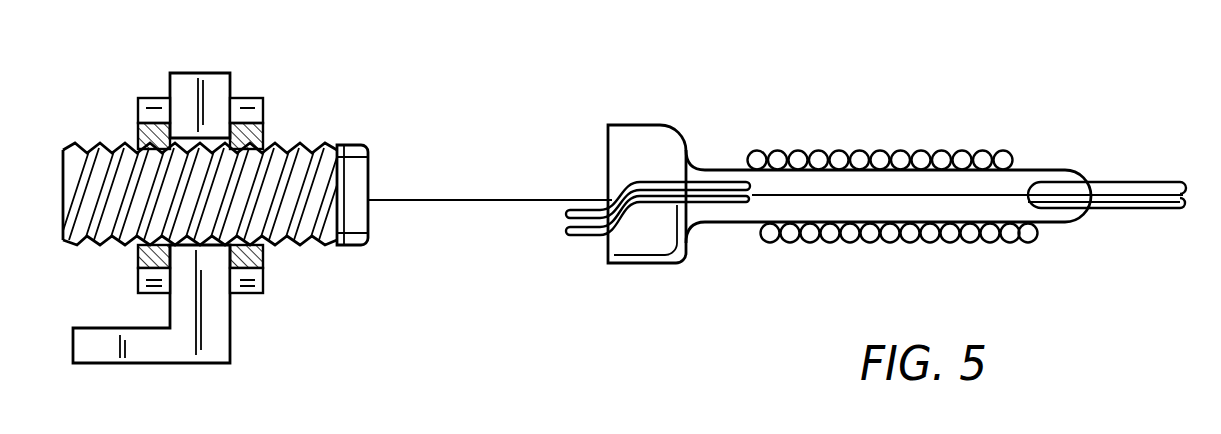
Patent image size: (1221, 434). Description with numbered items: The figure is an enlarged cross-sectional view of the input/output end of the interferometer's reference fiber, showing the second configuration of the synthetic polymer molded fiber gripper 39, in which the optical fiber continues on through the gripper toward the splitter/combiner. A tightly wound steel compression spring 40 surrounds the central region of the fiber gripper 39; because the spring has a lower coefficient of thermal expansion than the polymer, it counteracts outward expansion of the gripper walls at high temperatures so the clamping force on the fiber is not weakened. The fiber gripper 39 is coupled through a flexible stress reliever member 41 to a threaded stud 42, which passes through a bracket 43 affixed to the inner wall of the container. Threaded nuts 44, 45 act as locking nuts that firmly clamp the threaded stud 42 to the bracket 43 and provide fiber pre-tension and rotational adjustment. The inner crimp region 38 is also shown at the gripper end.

The crimp sleeve / bent strip 38 is at (760, 210).
The fiber gripper 39 is at (668, 152).
The compression spring 40 is at (832, 157).
The flexible stress reliever member 41 is at (482, 200).
The threaded stud 42 is at (370, 175).
The bracket 43 is at (218, 320).
The threaded nut 44 is at (263, 135).
The threaded nut 45 is at (138, 135).